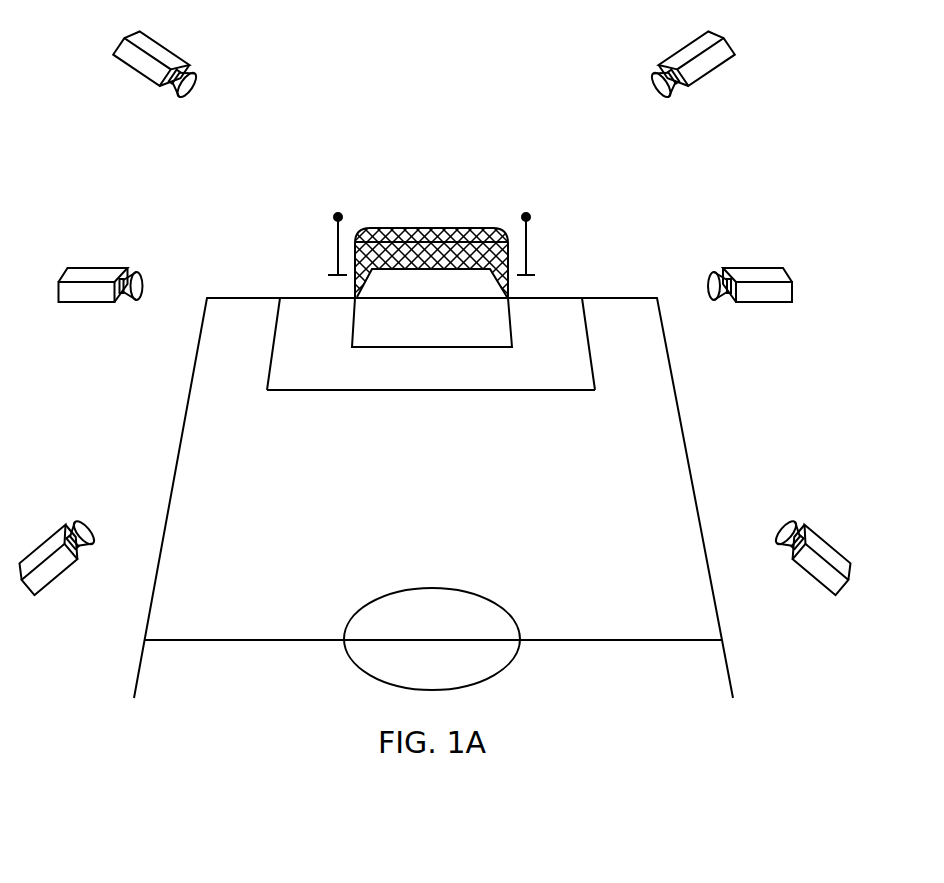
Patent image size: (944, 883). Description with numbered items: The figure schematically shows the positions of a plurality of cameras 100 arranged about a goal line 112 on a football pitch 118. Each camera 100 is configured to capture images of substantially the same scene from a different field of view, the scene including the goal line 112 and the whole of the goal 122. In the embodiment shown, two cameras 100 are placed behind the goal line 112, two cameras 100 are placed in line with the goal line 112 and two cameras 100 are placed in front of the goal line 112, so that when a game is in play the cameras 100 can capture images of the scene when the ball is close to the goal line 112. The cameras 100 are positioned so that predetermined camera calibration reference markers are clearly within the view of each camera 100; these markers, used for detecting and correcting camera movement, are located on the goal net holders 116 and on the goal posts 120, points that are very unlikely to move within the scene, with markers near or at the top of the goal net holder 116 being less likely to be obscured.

The camera 100 is at (143, 84).
The goal line 112 is at (432, 300).
The goal net holder 116 is at (337, 238).
The football pitch 118 is at (452, 507).
The goal post 120 is at (355, 293).
The goal 122 is at (427, 228).